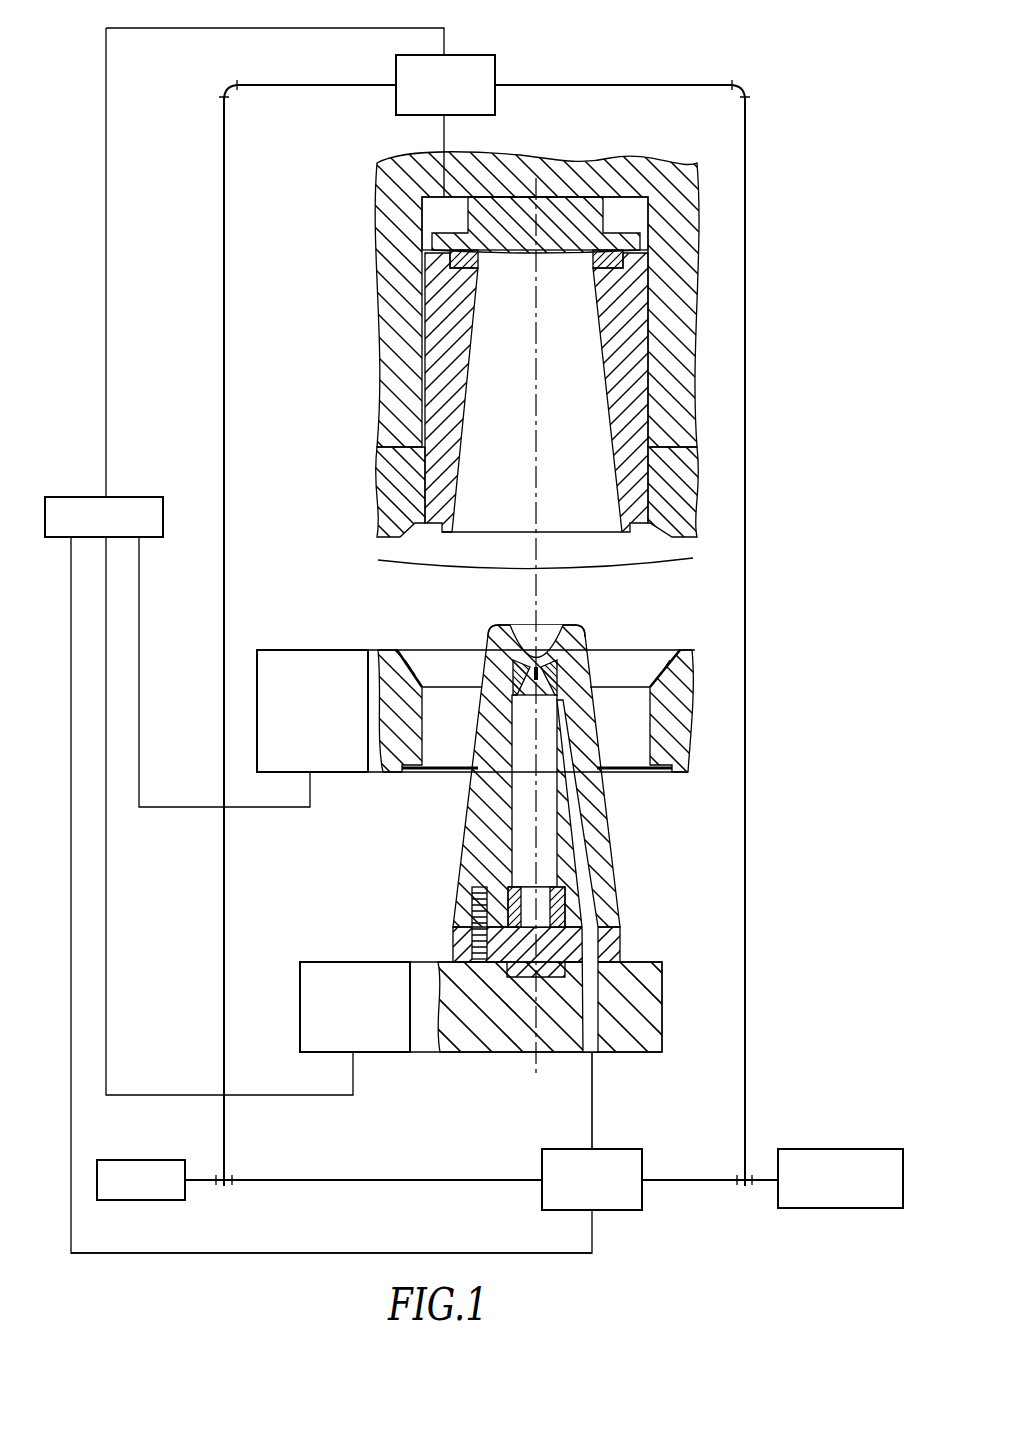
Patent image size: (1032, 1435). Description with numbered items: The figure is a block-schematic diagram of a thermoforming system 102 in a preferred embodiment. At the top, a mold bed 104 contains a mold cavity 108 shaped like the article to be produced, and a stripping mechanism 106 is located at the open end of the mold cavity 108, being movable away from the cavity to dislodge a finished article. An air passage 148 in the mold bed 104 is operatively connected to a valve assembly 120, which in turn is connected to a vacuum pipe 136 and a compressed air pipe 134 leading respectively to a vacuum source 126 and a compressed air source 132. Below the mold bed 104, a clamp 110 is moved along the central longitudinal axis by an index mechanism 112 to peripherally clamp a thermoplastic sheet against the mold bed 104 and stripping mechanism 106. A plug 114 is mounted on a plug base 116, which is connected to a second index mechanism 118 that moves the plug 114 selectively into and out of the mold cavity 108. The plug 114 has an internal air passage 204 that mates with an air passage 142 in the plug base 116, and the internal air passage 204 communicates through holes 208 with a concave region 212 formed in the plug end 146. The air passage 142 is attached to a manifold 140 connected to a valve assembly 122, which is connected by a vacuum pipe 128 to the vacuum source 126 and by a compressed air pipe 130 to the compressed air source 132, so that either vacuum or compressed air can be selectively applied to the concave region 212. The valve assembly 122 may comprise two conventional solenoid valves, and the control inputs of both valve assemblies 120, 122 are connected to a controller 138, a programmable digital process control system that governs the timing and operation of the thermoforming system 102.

The thermoforming system 102 is at (744, 1220).
The mold bed 104 is at (393, 380).
The stripping mechanism 106 is at (381, 490).
The mold cavity 108 is at (587, 484).
The clamp 110 is at (663, 650).
The index mechanism 112 is at (303, 650).
The plug 114 is at (482, 813).
The plug base 116 is at (458, 943).
The index mechanism 118 is at (327, 962).
The valve assembly 120 is at (495, 55).
The valve assembly 122 is at (622, 1210).
The vacuum source 126 is at (148, 1160).
The vacuum pipe 128 is at (342, 1180).
The compressed air pipe 130 is at (717, 1178).
The compressed air source 132 is at (843, 1149).
The compressed air pipe 134 is at (745, 136).
The vacuum pipe 136 is at (223, 228).
The controller 138 is at (142, 497).
The manifold 140 is at (592, 1093).
The air passage 142 is at (593, 975).
The plug end 146 is at (472, 636).
The air passage 148 is at (422, 222).
The internal air passage 204 is at (578, 852).
The holes 208 is at (570, 625).
The concave region 212 is at (525, 628).